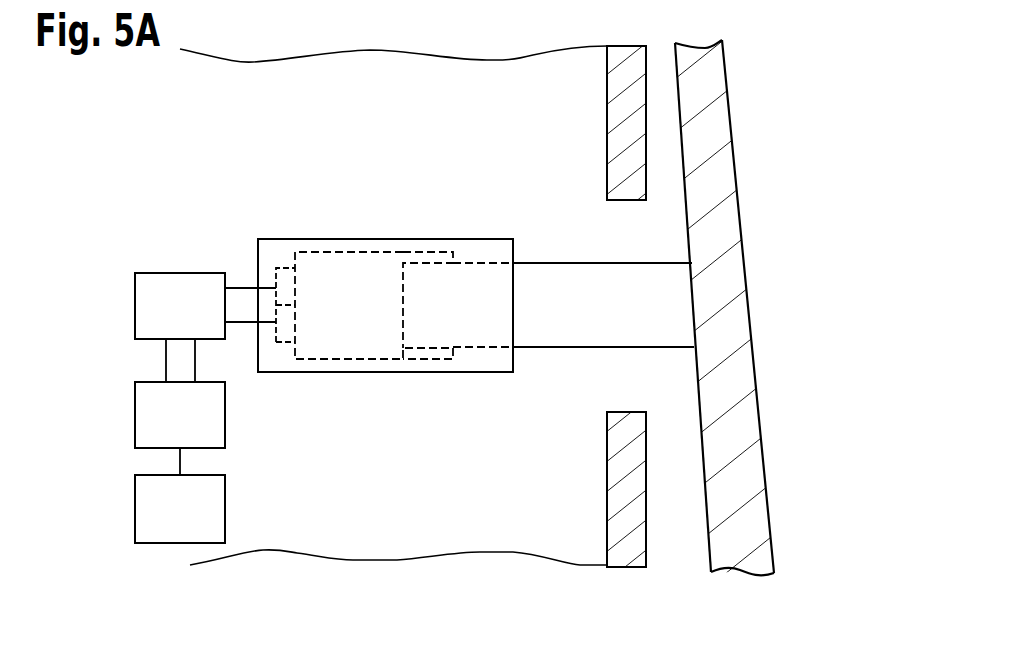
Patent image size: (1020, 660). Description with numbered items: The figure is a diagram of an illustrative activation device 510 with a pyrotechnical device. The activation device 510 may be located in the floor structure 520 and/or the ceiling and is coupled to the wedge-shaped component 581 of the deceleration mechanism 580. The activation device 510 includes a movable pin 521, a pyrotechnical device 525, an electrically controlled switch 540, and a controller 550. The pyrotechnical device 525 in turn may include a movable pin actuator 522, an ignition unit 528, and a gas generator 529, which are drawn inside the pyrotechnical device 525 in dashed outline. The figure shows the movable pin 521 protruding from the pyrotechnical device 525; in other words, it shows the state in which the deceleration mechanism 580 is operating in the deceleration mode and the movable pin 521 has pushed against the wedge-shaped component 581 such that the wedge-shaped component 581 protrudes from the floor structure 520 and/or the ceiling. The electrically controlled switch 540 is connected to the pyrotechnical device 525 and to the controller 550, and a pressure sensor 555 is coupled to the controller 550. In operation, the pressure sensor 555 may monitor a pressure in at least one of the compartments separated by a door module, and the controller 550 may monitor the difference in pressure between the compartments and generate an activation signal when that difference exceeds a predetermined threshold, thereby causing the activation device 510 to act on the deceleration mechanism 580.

The activation device 510 is at (238, 213).
The floor structure 520 is at (347, 533).
The movable pin 521 is at (543, 283).
The movable pin actuator 522 is at (385, 290).
The pyrotechnical device 525 is at (374, 386).
The ignition unit 528 is at (280, 267).
The gas generator 529 is at (307, 277).
The electrically controlled switch 540 is at (157, 320).
The controller 550 is at (157, 428).
The pressure sensor 555 is at (180, 509).
The deceleration mechanism 580 is at (774, 315).
The wedge-shaped component 581 is at (755, 487).